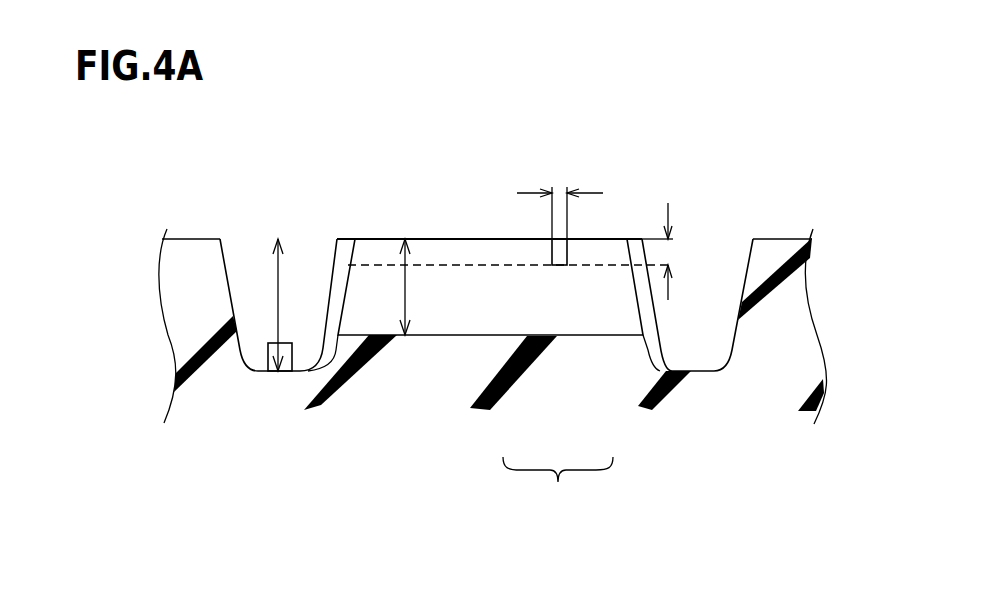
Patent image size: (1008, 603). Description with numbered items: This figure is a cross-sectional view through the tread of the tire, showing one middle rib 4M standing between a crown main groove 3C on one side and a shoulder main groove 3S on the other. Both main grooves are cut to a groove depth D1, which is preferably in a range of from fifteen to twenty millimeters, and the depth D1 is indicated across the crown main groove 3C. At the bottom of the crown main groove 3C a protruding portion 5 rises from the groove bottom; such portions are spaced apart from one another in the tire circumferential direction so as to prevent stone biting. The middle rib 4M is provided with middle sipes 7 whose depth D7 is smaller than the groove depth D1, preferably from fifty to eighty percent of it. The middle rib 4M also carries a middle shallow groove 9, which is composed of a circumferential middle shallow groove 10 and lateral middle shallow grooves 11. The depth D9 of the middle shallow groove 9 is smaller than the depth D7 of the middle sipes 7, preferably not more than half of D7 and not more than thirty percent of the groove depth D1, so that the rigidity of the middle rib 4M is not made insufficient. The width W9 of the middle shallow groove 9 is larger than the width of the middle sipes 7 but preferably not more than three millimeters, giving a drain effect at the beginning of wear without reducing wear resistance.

The crown main groove 3C is at (312, 233).
The shoulder main groove 3S is at (727, 233).
The middle rib 4M is at (482, 186).
The protruding portion 5 is at (255, 372).
The middle sipe 7 is at (432, 335).
The middle shallow groove 9 is at (558, 486).
The circumferential middle shallow groove 10 is at (552, 252).
The lateral middle shallow groove 11 is at (475, 264).
The groove depth D1 is at (278, 300).
The depth of the middle sipe D7 is at (404, 288).
The depth of the middle shallow groove D9 is at (672, 250).
The width of the middle shallow groove W9 is at (560, 199).